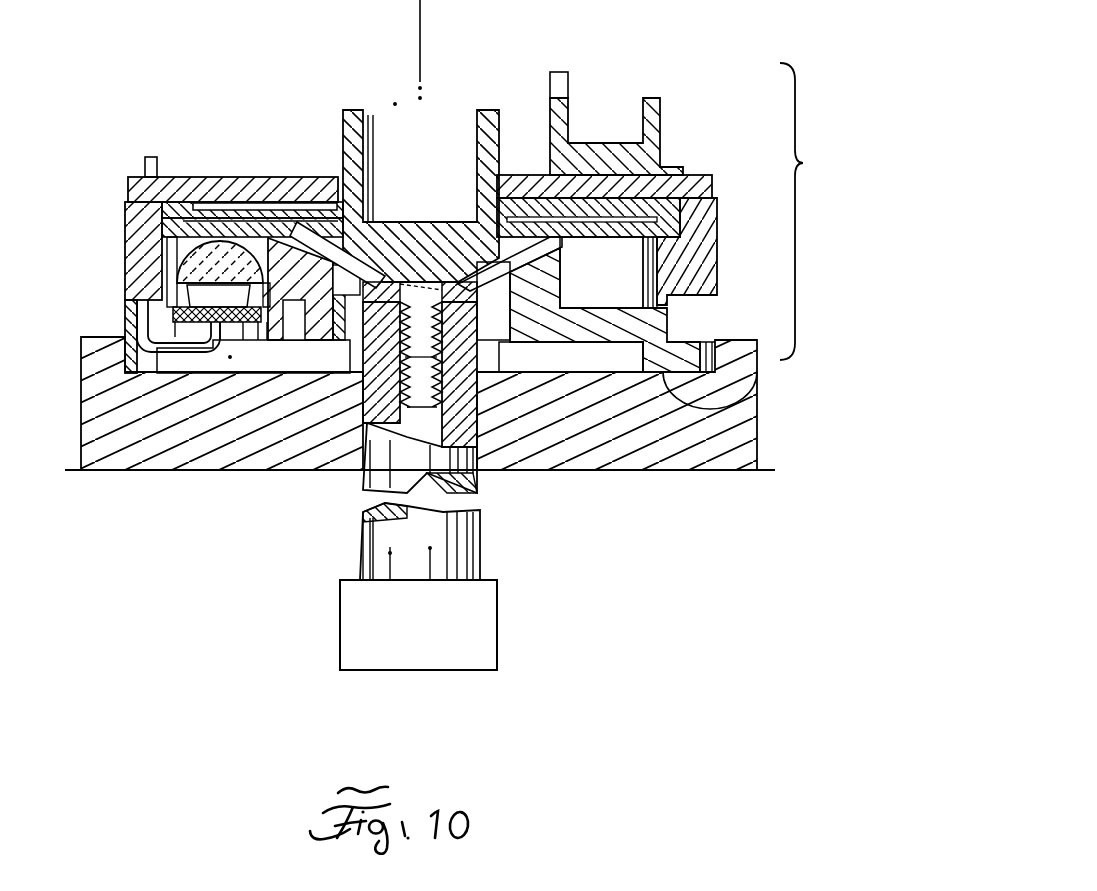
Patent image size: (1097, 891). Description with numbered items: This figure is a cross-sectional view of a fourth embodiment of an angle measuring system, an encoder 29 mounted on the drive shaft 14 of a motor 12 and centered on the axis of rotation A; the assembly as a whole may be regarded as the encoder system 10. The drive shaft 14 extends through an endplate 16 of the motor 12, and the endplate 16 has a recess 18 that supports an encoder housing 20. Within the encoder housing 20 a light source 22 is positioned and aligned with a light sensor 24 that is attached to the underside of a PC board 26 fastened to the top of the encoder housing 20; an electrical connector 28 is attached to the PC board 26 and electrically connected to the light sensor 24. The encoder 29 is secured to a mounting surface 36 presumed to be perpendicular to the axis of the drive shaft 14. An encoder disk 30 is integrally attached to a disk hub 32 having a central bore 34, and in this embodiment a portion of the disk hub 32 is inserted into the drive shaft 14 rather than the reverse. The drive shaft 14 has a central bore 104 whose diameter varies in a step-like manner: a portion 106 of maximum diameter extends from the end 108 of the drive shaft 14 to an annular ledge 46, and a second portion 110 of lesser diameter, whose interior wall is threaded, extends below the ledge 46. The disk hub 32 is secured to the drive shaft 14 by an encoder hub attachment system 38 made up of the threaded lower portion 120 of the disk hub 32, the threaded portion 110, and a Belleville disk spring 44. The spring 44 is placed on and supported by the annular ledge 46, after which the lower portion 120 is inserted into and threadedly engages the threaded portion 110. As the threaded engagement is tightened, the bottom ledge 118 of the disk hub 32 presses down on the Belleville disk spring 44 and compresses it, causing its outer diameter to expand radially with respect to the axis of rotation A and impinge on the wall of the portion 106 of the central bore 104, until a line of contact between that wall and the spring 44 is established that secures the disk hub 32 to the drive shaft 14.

The axis of rotation A is at (421, 2).
The fastener assembly 10 is at (874, 207).
The motor 12 is at (433, 660).
The drive shaft 14 is at (362, 488).
The endplate 16 is at (153, 458).
The recess 18 is at (703, 338).
The encoder housing 20 is at (125, 277).
The light source 22 is at (170, 255).
The light sensor 24 is at (220, 204).
The PC board 26 is at (128, 190).
The electrical connector 28 is at (662, 127).
The encoder 29 is at (872, 255).
The encoder disk 30 is at (277, 204).
The disk hub 32 is at (343, 115).
The central bore 34 is at (546, 44).
The mounting surface 36 is at (758, 377).
The encoder hub attachment system 38 is at (868, 149).
The Belleville disk spring 44 is at (503, 176).
The annular ledge 46 is at (493, 301).
The central bore 104 is at (470, 293).
The portion of maximum diameter 106 is at (342, 172).
The end of the drive shaft 108 is at (457, 280).
The second portion 110 is at (463, 430).
The bottom ledge 118 is at (468, 278).
The lower portion 120 is at (443, 320).